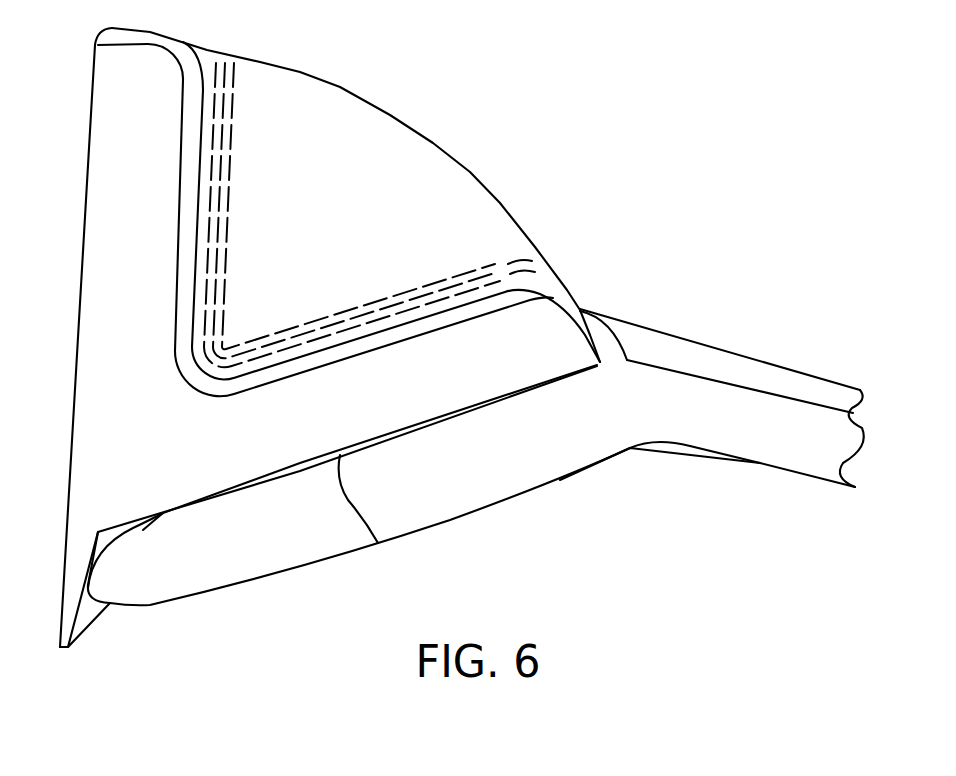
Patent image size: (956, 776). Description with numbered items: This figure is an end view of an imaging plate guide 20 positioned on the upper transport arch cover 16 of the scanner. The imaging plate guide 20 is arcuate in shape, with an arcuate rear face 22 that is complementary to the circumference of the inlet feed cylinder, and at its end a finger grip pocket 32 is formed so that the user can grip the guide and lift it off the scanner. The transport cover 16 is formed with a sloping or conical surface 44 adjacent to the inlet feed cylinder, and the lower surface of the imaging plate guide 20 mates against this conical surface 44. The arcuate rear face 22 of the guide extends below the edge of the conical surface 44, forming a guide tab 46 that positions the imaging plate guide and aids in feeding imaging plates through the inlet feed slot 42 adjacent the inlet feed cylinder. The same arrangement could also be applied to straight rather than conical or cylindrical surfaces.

The upper transport arch cover 16 is at (792, 443).
The imaging plate guide 20 is at (428, 70).
The arcuate rear face 22 is at (80, 232).
The finger grip pocket 32 is at (360, 280).
The inlet feed slot 42 is at (147, 582).
The conical surface 44 is at (378, 543).
The guide tab 46 is at (60, 603).